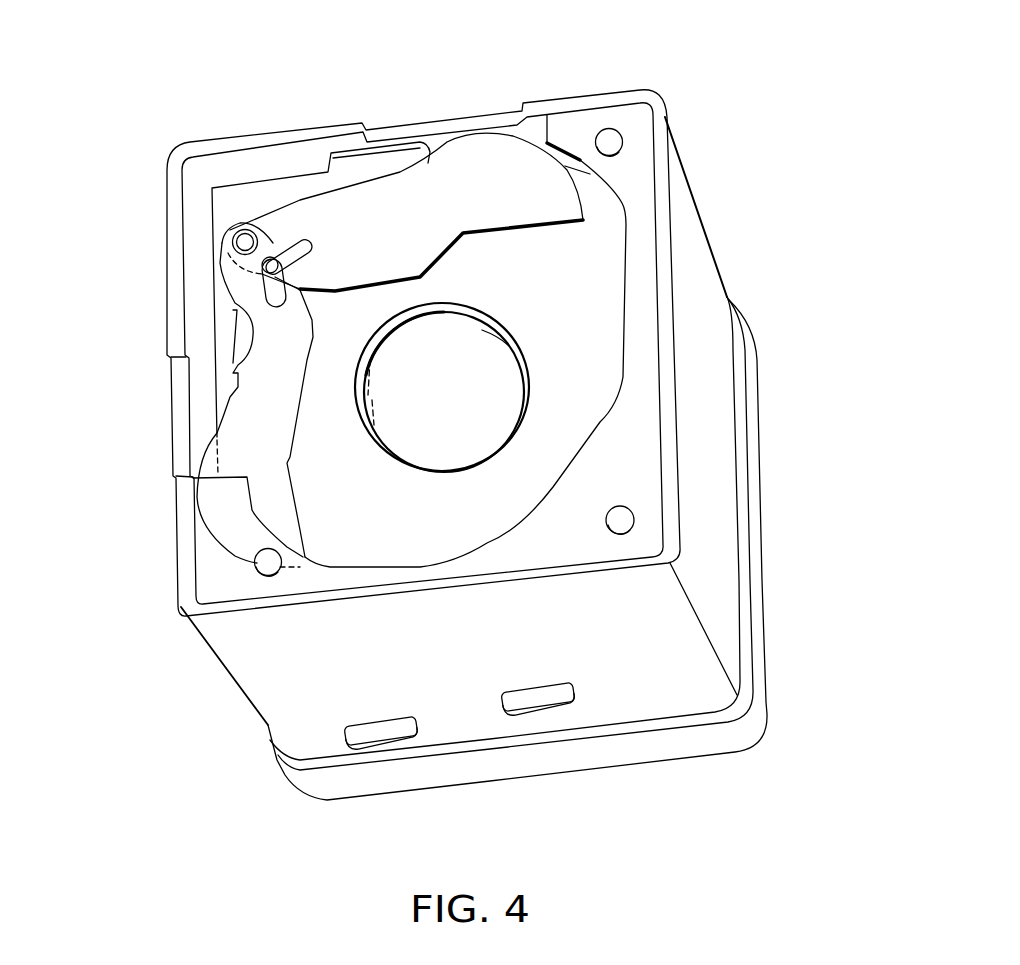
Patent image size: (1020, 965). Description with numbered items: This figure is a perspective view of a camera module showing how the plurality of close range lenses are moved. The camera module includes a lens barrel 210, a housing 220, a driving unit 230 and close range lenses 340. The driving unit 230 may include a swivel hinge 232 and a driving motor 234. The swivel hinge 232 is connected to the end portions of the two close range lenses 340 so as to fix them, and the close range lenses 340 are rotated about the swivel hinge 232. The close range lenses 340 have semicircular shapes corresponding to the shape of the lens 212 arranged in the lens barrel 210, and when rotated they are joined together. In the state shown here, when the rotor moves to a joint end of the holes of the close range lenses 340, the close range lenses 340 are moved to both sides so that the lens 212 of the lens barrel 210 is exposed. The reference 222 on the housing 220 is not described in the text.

The lens barrel 210 is at (593, 243).
The lens 212 is at (493, 377).
The housing 220 is at (713, 433).
The side wall of housing 222 is at (755, 537).
The driving unit 230 is at (243, 282).
The swivel hinge 232 is at (243, 240).
The driving motor 234 is at (270, 265).
The close range lens 340 is at (422, 213).